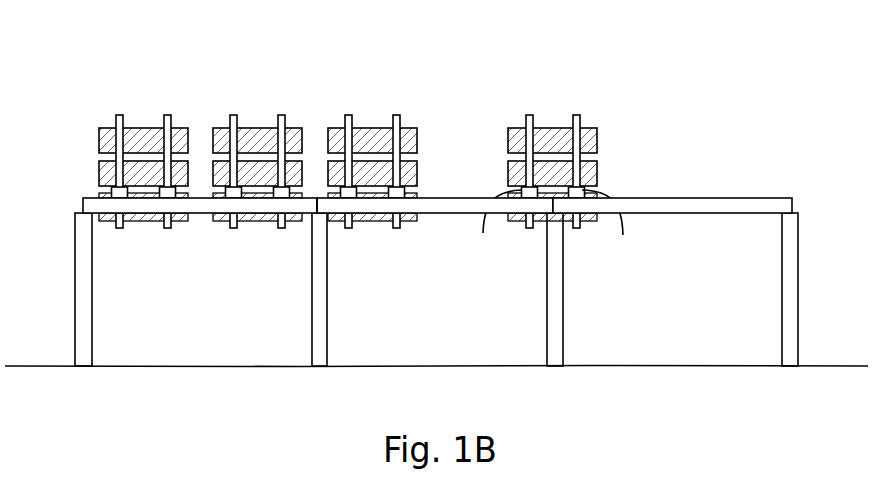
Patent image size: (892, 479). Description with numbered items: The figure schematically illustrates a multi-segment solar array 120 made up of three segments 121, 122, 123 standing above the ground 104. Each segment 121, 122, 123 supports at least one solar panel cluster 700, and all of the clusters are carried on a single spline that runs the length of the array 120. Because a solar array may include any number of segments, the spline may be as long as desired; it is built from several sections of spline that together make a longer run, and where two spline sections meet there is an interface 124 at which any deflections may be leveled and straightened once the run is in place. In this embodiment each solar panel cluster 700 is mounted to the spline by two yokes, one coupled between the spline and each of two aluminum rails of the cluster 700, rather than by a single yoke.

The ground 104 is at (825, 363).
The multi-segment solar array 120 is at (634, 77).
The segment 121 is at (84, 172).
The segment 122 is at (448, 166).
The segment 123 is at (710, 166).
The interface 124 is at (317, 195).
The solar panel cluster 700 is at (174, 152).